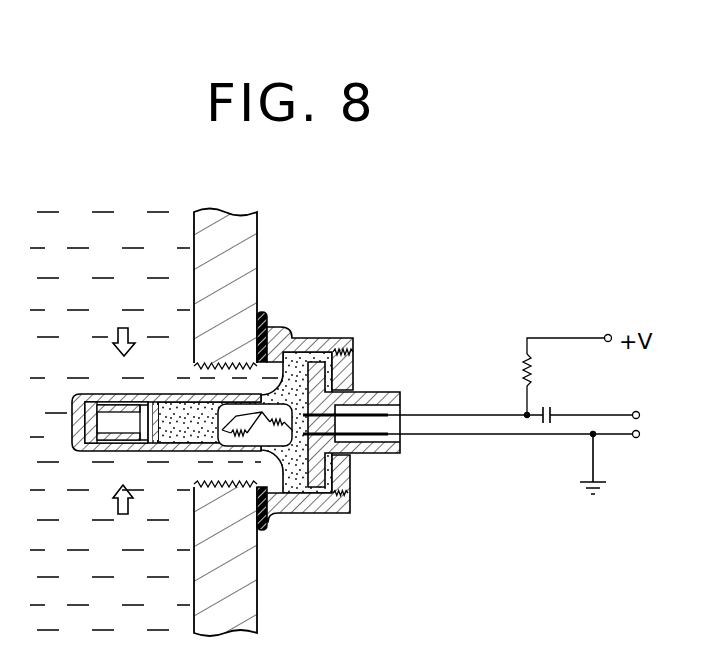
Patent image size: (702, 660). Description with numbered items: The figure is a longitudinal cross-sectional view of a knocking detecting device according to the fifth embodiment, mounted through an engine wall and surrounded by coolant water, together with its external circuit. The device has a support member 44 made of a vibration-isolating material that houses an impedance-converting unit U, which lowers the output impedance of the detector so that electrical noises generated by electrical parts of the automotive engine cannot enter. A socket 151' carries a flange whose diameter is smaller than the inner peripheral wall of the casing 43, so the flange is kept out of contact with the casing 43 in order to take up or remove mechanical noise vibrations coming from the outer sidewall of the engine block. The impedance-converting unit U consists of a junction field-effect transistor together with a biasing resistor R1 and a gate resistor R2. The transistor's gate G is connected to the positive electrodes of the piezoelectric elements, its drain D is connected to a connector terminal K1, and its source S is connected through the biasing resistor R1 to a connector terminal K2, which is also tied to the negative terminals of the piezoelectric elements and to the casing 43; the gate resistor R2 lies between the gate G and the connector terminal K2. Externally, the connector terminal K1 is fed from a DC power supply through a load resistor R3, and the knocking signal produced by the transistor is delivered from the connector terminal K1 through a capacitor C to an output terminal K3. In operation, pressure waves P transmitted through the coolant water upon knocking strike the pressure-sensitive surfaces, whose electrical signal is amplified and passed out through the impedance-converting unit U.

The flange nut 43 is at (349, 340).
The insulating body 44 is at (163, 398).
The lower flange / housing end 151' is at (309, 501).
The housing core U is at (296, 362).
The strain gauge G is at (247, 413).
The diaphragm chamber D is at (255, 410).
The sensor S is at (267, 431).
The resistor R1 is at (322, 482).
The resistor R2 is at (228, 445).
The resistor R3 is at (563, 376).
The electrode lead K1 is at (378, 413).
The electrode lead K2 is at (383, 437).
The output terminal K3 is at (655, 422).
The capacitor C is at (551, 410).
The pressure P is at (118, 331).